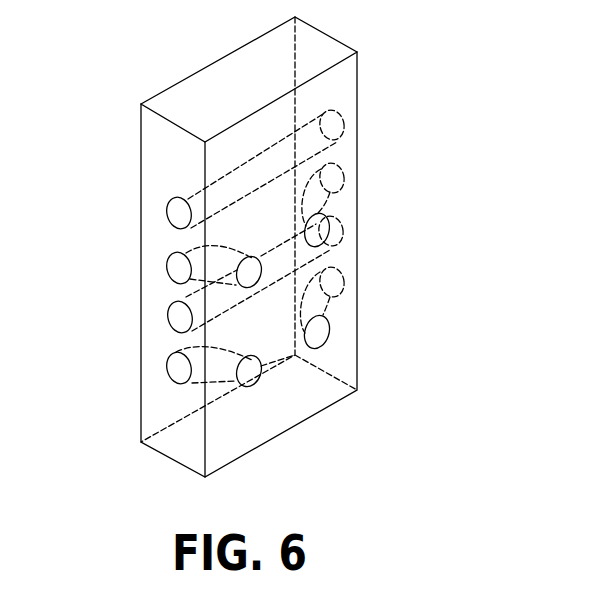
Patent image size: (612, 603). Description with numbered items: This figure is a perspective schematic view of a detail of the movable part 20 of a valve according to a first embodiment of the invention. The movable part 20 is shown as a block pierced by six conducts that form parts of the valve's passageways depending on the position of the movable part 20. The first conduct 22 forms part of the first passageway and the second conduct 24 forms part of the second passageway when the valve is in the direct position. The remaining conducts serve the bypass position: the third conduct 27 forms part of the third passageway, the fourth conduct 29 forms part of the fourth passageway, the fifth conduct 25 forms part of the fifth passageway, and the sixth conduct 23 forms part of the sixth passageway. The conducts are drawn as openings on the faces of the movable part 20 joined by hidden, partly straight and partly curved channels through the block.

The movable part 20 is at (207, 92).
The first conduct 22 is at (193, 198).
The sixth conduct 23 is at (325, 200).
The second conduct 24 is at (272, 268).
The fifth conduct 25 is at (318, 305).
The third conduct 27 is at (197, 260).
The fourth conduct 29 is at (192, 383).